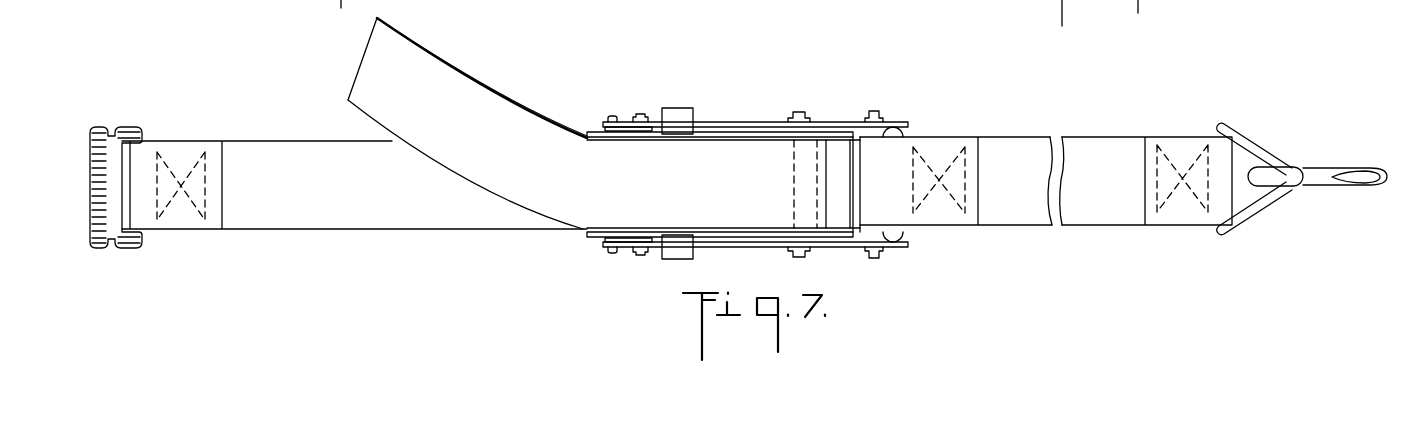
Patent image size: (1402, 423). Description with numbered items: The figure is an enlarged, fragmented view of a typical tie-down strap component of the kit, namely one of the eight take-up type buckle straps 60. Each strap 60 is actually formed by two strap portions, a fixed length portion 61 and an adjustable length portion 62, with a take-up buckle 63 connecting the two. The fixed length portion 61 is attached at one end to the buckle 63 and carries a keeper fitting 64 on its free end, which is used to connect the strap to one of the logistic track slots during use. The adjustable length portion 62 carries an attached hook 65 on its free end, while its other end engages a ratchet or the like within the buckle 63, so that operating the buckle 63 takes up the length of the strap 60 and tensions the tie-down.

The take-up type buckle strap 60 is at (857, 72).
The fixed length portion 61 is at (298, 222).
The adjustable length portion 62 is at (1018, 145).
The take-up buckle 63 is at (695, 122).
The keeper fitting 64 is at (133, 244).
The hook 65 is at (1318, 170).